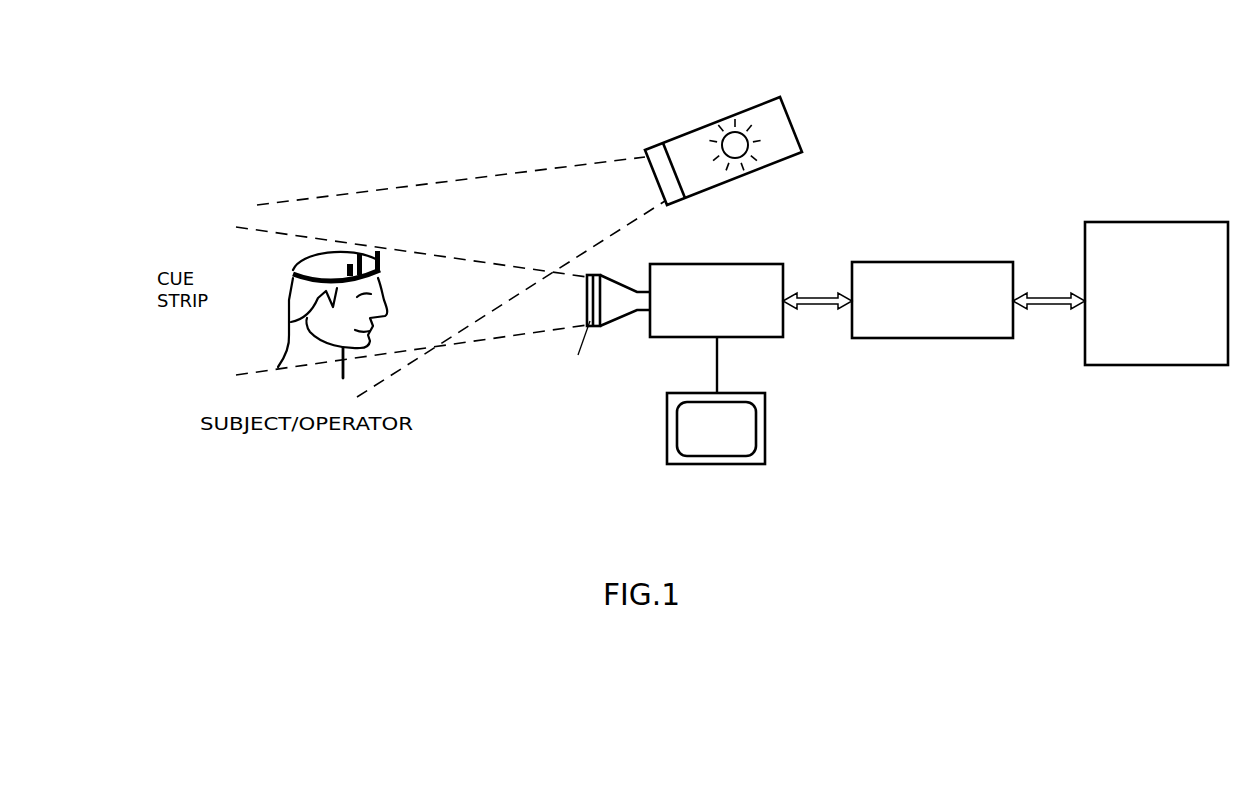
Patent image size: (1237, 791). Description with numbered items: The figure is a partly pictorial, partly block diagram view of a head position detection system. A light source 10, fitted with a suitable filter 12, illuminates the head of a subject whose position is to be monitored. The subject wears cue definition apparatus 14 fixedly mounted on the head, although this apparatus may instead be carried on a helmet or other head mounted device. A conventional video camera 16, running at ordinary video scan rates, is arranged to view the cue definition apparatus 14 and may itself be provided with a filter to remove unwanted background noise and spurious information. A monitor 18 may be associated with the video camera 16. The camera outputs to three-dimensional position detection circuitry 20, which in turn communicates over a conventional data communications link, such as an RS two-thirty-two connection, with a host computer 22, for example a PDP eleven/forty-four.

The light source 10 is at (747, 129).
The filter 12 is at (657, 185).
The cue definition apparatus 14 is at (355, 250).
The video camera 16 is at (744, 325).
The monitor 18 is at (744, 462).
The three-dimensional position detection circuitry 20 is at (950, 335).
The host computer 22 is at (1187, 357).